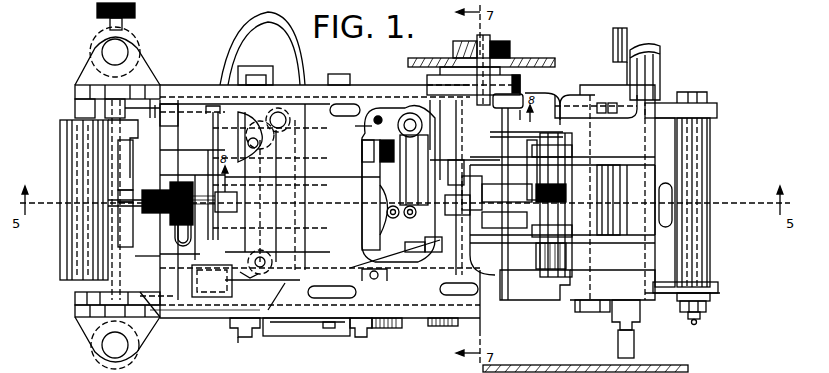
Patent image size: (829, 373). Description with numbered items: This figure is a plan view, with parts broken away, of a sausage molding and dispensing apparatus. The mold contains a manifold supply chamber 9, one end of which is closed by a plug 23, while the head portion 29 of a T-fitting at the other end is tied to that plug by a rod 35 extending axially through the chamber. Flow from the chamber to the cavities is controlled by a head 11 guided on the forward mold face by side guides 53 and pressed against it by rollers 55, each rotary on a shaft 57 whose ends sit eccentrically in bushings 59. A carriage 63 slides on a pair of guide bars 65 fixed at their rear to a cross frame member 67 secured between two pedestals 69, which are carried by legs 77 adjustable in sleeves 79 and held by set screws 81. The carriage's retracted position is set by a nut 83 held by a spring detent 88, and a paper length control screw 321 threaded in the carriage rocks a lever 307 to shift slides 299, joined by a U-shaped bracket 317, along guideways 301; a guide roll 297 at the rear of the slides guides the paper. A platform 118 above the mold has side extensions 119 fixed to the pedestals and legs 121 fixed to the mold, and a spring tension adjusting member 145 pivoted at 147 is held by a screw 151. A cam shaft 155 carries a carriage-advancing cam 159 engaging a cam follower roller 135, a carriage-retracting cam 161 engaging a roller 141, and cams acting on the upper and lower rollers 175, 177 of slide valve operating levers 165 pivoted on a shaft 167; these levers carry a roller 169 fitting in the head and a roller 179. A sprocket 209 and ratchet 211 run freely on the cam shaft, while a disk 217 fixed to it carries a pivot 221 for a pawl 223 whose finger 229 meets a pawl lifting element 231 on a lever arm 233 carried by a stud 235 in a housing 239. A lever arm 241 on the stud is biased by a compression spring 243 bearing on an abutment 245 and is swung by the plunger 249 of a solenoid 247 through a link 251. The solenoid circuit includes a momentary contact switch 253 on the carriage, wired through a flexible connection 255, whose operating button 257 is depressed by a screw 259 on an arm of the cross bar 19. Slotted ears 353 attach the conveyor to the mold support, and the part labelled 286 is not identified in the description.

The set screws 81 is at (97, 11).
The sleeves 79 is at (100, 50).
The legs 77 is at (128, 52).
The vertical pedestals 69 is at (75, 92).
The guide roll 297 is at (60, 118).
The side extensions 119 is at (138, 98).
The horizontal platform 118 is at (255, 112).
The dome cover 286 is at (262, 64).
The flexible wiring connection 255 is at (306, 72).
The stud 235 is at (410, 112).
The pivot 221 is at (446, 50).
The cam shaft 155 is at (468, 38).
The pawl 223 is at (515, 54).
The sprocket 209 is at (530, 62).
The ratchet 211 is at (531, 80).
The disk 217 is at (549, 100).
The finger 229 is at (508, 107).
The rod 35 is at (612, 30).
The head portion 29 is at (660, 52).
The side guides 53 is at (708, 100).
The bushings 59 is at (712, 122).
The shaft 57 is at (702, 146).
The rollers 55 is at (710, 170).
The slides 299 is at (168, 112).
The horizontal cross frame member 67 is at (169, 115).
The guide bars 65 is at (183, 150).
The guideways 301 is at (133, 149).
The lever 307 is at (118, 164).
The paper length control screw 321 is at (137, 186).
The nut 83 is at (180, 186).
The carriage 63 is at (210, 194).
The housing 239 is at (349, 126).
The compression spring 243 is at (351, 148).
The abutment 245 is at (372, 162).
The lever arm 241 is at (302, 177).
The lever arm 233 is at (465, 140).
The pawl lifting element 231 is at (478, 162).
The legs 121 is at (640, 126).
The slide valve operating levers 165 is at (598, 158).
The lower cam follower roller 177 is at (497, 193).
The carriage-advancing cam 159 is at (578, 196).
The roller 169 is at (650, 197).
The manifold supply chamber 9 is at (640, 210).
The U-shaped bracket 317 is at (133, 232).
The spring detent 88 is at (189, 205).
The momentary contact switch 253 is at (190, 285).
The cross bar 19 is at (271, 189).
The plunger 249 is at (355, 232).
The link 251 is at (420, 241).
The cam follower roller 135 is at (457, 187).
The upper cam follower roller 175 is at (545, 230).
The roller 179 is at (620, 245).
The head 11 is at (676, 262).
The solenoid 247 is at (273, 282).
The operating button 257 is at (248, 288).
The screw 259 is at (274, 296).
The spring tension adjusting member 145 is at (235, 320).
The screw 151 is at (240, 340).
The pivot 147 is at (358, 337).
The cam follower roller 141 is at (398, 328).
The carriage-retracting cam 161 is at (452, 326).
The transverse shaft 167 is at (570, 312).
The plug 23 is at (640, 318).
The slotted ears 353 is at (634, 348).